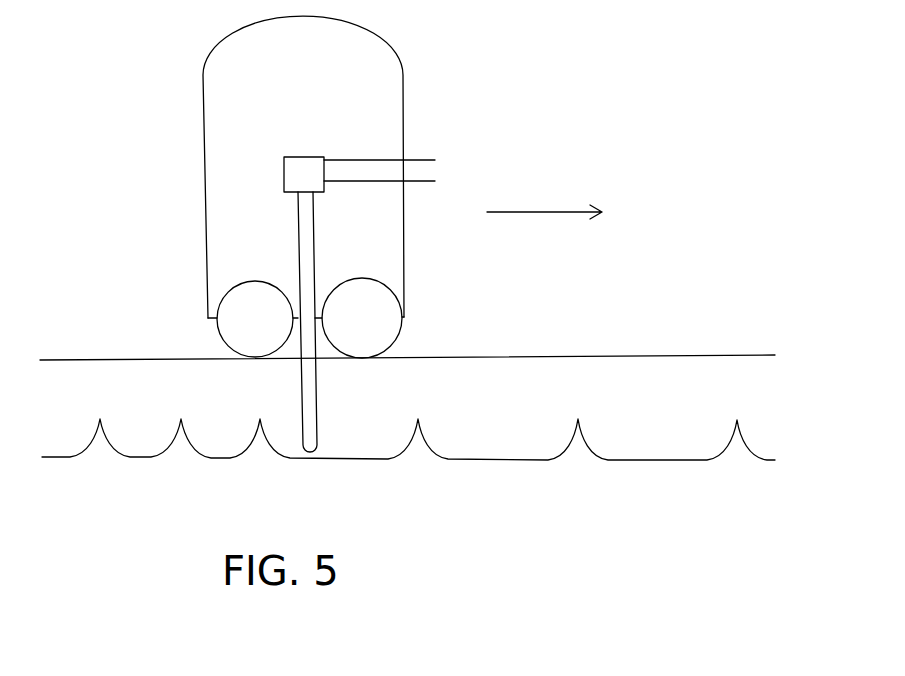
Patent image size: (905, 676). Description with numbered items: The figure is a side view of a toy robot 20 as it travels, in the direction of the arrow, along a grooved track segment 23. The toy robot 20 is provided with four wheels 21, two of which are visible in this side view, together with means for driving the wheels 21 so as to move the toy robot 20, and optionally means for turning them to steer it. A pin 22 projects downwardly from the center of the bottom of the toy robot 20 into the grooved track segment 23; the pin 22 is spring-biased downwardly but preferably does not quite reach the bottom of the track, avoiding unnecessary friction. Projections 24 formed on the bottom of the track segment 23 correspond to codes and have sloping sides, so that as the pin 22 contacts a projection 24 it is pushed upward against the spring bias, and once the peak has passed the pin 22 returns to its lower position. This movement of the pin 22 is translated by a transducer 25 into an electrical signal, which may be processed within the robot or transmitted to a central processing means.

The toy robot 20 is at (428, 74).
The wheels 21 is at (235, 330).
The pin 22 is at (310, 402).
The grooved track segment 23 is at (513, 394).
The projections 24 is at (582, 437).
The transducer 25 is at (284, 175).